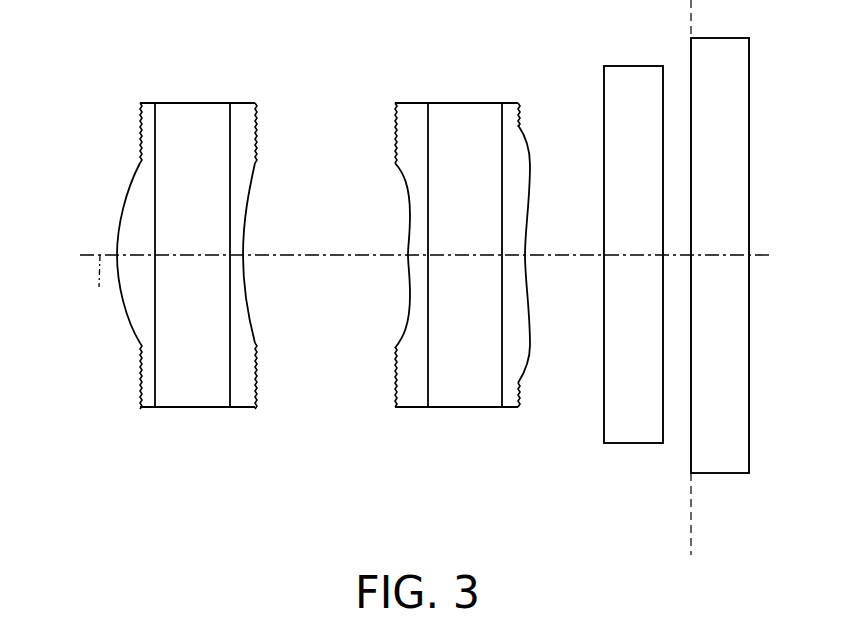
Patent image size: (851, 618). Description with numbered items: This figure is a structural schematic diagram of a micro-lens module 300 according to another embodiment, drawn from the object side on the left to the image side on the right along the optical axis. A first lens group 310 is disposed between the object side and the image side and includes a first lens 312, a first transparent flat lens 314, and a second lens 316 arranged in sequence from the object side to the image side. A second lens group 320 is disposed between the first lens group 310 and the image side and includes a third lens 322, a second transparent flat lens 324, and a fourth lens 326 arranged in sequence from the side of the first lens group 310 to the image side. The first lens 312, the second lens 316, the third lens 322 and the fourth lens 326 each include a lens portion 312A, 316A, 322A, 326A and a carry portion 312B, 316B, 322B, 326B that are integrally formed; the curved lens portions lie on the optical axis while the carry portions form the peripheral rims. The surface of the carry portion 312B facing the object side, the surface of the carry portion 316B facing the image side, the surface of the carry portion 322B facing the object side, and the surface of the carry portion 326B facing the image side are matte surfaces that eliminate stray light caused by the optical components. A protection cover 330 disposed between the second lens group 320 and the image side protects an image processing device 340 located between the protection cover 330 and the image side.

The micro-lens module 300 is at (815, 565).
The first lens group 310 is at (197, 308).
The first lens 312 is at (119, 288).
The lens portion of the first lens 312A is at (139, 197).
The carry portion of the first lens 312B is at (140, 128).
The first transparent flat lens 314 is at (195, 410).
The second lens 316 is at (276, 288).
The lens portion of the second lens 316A is at (241, 224).
The carry portion of the second lens 316B is at (257, 140).
The second lens group 320 is at (462, 306).
The third lens 322 is at (382, 288).
The lens portion of the third lens 322A is at (420, 190).
The carry portion of the third lens 322B is at (395, 118).
The second transparent flat lens 324 is at (466, 410).
The fourth lens 326 is at (548, 287).
The lens portion of the fourth lens 326A is at (520, 168).
The carry portion of the fourth lens 326B is at (521, 120).
The protection cover 330 is at (632, 430).
The image processing device 340 is at (718, 458).